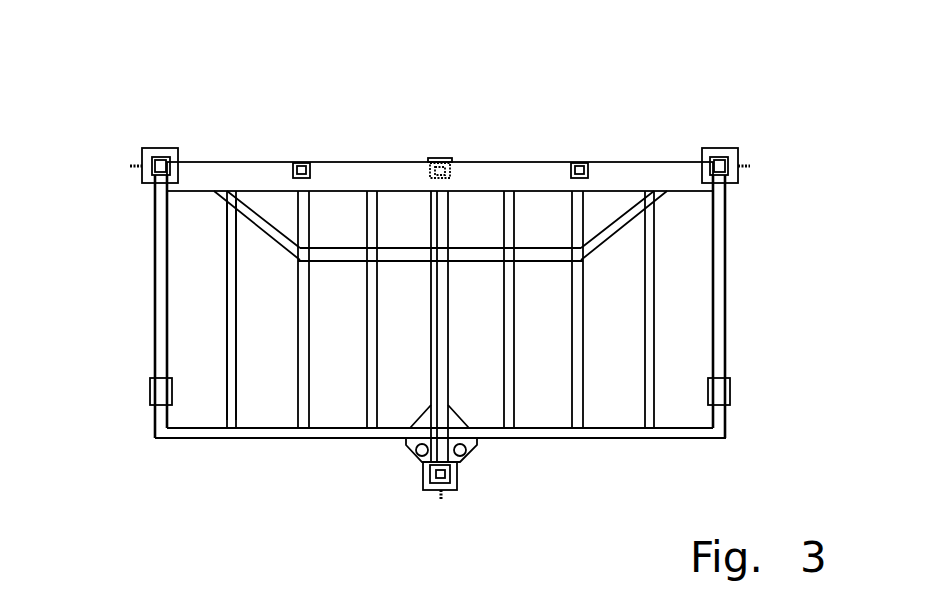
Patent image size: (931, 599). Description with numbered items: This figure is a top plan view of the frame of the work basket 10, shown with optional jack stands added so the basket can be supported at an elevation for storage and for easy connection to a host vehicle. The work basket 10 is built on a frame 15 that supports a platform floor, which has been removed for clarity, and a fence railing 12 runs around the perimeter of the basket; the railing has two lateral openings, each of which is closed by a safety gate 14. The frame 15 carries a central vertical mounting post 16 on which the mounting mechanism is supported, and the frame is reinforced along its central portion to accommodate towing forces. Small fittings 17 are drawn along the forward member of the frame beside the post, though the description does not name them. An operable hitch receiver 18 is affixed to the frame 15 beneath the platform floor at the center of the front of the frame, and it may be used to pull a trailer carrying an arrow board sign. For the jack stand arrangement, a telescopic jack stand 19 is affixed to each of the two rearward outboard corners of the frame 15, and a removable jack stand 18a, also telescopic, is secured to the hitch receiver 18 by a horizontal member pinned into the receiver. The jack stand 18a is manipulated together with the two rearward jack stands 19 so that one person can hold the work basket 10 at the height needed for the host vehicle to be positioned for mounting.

The work basket 10 is at (209, 88).
The fence railing 12 is at (277, 438).
The safety gate 14 is at (156, 338).
The frame 15 is at (228, 290).
The central vertical mounting post 16 is at (440, 158).
The mounting brackets 17 is at (302, 161).
The hitch receiver 18 is at (410, 452).
The removable jack stand 18a is at (450, 473).
The jack stand 19 is at (160, 148).